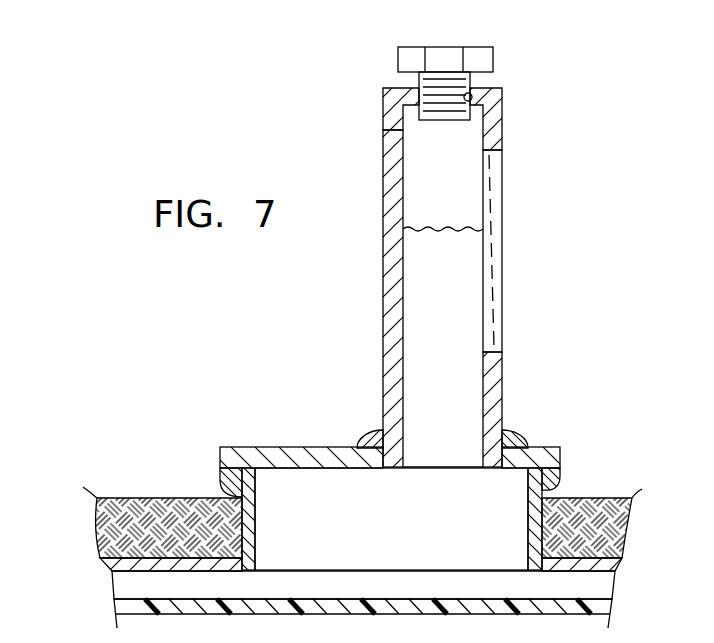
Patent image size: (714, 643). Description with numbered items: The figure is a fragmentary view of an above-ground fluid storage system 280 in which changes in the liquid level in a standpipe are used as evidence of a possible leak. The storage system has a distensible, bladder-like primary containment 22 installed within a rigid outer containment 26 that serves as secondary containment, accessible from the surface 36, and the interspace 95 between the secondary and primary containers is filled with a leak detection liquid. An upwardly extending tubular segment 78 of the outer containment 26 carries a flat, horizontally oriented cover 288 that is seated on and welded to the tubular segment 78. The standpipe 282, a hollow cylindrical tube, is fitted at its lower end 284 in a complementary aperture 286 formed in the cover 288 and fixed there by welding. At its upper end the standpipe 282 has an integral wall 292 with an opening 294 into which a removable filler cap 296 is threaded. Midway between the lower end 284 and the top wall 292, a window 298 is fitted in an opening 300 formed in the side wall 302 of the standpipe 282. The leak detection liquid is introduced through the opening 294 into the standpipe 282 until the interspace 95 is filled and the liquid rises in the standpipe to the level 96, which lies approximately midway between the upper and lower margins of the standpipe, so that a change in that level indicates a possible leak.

The primary containment 22 is at (118, 592).
The outer containment 26 is at (100, 551).
The surface 36 is at (172, 497).
The tubular segment 78 is at (546, 489).
The interspace 95 is at (603, 583).
The liquid level 96 is at (458, 228).
The fluid storage system 280 is at (439, 350).
The standpipe 282 is at (476, 83).
The lower end 284 is at (438, 468).
The aperture 286 is at (403, 447).
The cover 288 is at (282, 447).
The integral wall 292 is at (397, 88).
The opening 294 is at (472, 98).
The filler cap 296 is at (494, 50).
The window 298 is at (500, 196).
The opening 300 is at (498, 344).
The side wall 302 is at (383, 272).